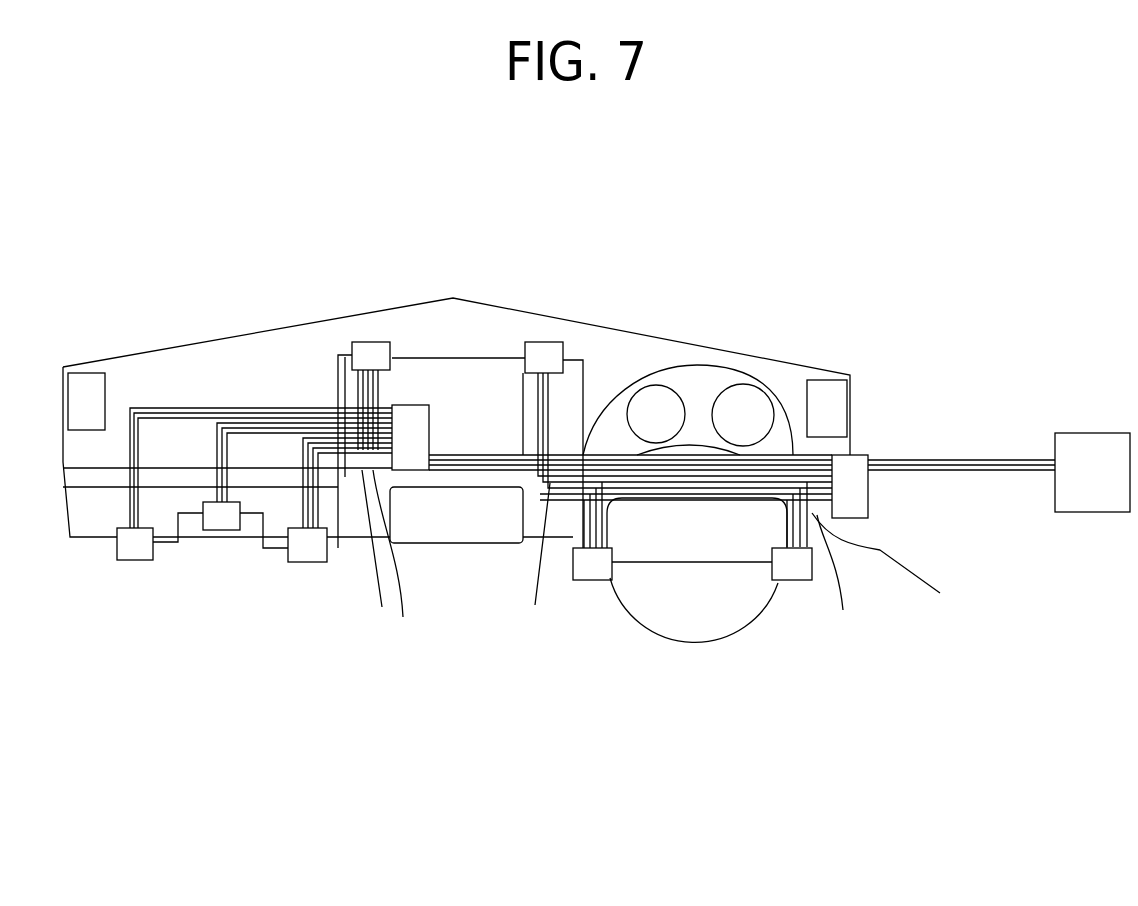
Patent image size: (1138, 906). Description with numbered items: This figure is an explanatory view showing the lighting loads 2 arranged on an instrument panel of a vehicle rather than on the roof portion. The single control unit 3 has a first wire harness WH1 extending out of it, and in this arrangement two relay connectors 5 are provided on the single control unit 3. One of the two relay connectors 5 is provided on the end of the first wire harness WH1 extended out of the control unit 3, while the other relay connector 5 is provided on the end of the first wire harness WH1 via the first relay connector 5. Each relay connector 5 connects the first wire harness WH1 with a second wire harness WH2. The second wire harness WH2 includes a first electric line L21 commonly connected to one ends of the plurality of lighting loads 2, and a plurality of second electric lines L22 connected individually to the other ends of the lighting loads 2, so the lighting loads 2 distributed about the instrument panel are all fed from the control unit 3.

The lighting load 2 is at (362, 342).
The control unit 3 is at (1097, 433).
The relay connector 5 is at (430, 427).
The first wire harness WH1 is at (795, 458).
The second wire harness WH2 is at (956, 870).
The first electric line L21 is at (582, 397).
The second electric line L22 is at (383, 405).